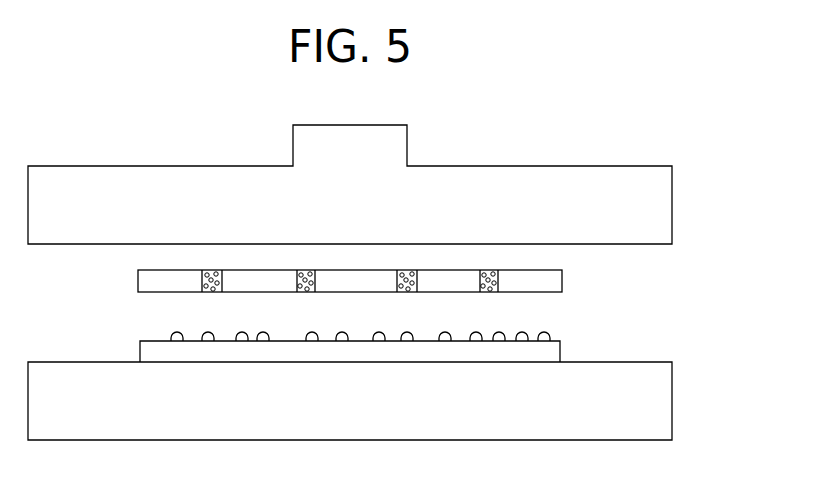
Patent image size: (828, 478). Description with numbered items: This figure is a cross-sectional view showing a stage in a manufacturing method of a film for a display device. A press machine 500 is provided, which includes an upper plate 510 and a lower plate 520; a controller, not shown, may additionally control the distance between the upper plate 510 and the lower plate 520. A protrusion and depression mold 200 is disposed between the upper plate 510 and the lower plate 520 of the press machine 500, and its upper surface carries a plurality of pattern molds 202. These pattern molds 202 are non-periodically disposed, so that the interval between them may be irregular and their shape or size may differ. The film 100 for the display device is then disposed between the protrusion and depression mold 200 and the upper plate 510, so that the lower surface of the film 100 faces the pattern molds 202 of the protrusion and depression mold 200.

The film 100 is at (158, 278).
The protrusion and depression mold 200 is at (157, 350).
The pattern molds 202 is at (170, 337).
The press machine 500 is at (393, 282).
The upper plate 510 is at (628, 220).
The lower plate 520 is at (630, 375).